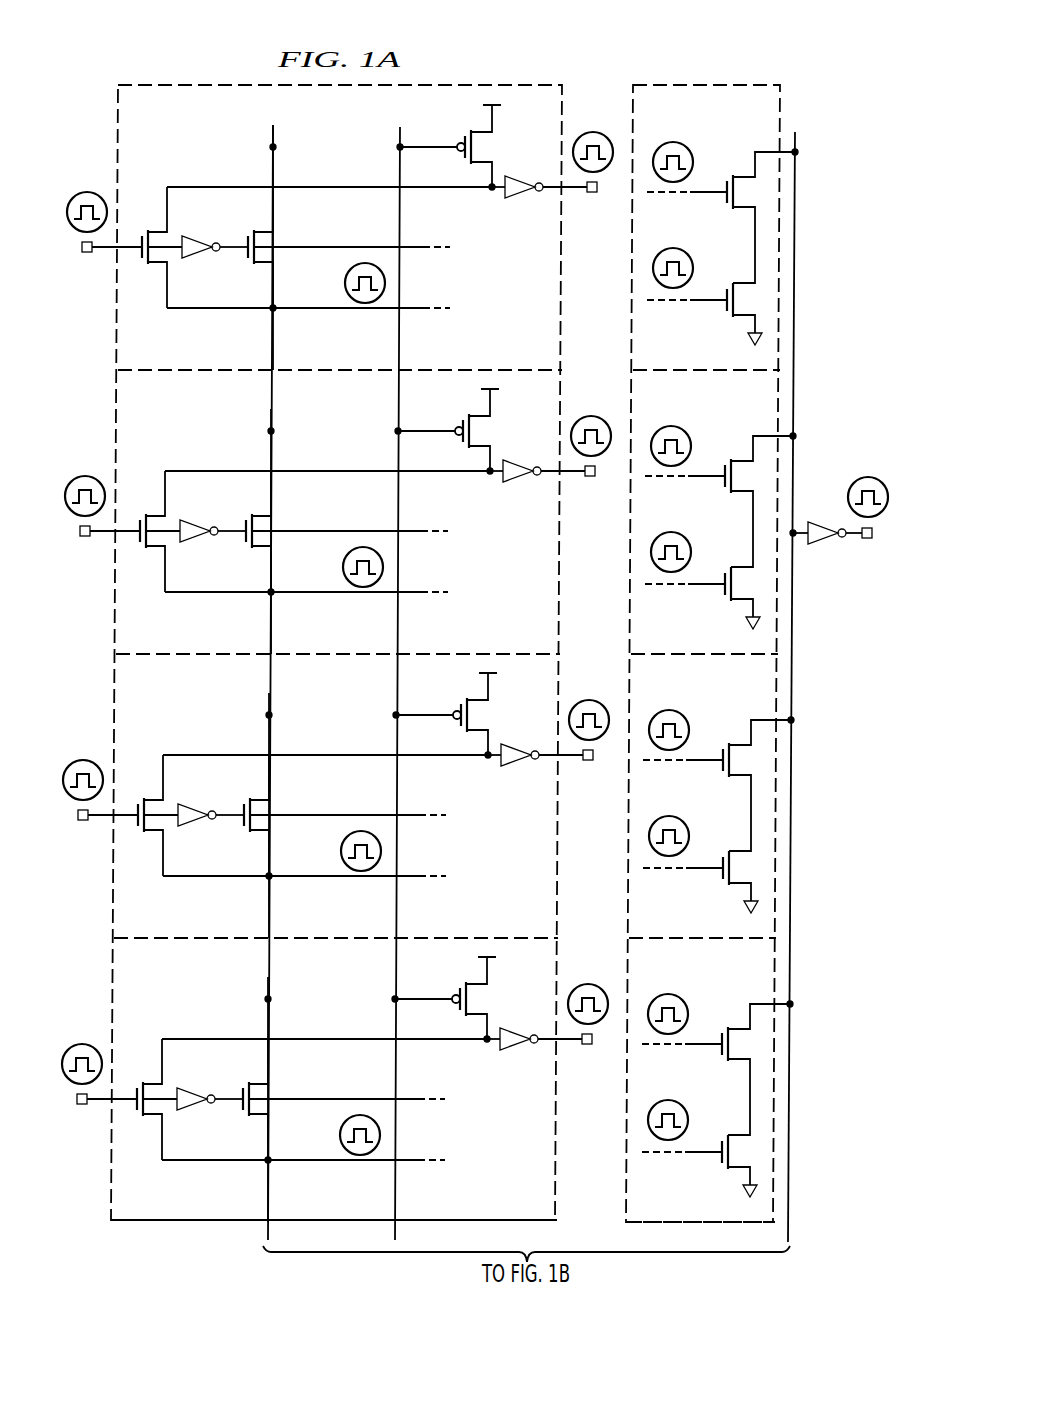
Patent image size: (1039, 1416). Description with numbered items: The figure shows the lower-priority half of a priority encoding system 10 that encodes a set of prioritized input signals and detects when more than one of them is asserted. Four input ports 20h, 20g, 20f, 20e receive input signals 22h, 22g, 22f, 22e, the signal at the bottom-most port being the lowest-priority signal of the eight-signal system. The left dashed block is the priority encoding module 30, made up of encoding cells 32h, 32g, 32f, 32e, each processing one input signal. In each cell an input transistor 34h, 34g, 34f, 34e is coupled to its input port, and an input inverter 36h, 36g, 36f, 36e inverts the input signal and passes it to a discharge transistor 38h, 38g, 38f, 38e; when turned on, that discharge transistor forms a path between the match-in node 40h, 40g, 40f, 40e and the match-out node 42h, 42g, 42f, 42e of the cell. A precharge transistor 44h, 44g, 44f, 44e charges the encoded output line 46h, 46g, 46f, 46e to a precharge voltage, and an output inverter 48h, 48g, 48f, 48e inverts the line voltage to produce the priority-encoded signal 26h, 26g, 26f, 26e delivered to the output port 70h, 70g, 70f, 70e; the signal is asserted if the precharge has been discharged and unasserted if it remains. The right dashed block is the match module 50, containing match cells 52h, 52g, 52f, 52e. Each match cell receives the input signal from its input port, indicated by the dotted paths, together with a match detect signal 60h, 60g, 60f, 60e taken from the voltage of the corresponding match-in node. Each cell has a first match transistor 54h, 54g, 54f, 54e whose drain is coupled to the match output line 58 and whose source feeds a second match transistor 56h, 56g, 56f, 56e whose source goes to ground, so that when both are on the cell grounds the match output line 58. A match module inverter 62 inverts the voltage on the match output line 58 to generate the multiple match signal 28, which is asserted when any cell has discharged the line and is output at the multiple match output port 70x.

The priority encoding system 10 is at (839, 52).
The multiple match signal 28 is at (870, 477).
The priority encoding module 30 is at (197, 80).
The match module 50 is at (721, 74).
The match output line 58 is at (797, 250).
The match module inverter 62 is at (823, 547).
The multiple match output port 70x is at (867, 539).
The input port 20h is at (86, 253).
The input port 20g is at (98, 556).
The input port 20f is at (96, 840).
The input port 20e is at (95, 1124).
The input signal 22h is at (88, 192).
The input signal 22g is at (374, 445).
The input signal 22f is at (372, 729).
The input signal 22e is at (371, 1013).
The priority-encoded signal 26h is at (594, 132).
The priority-encoded signal 26g is at (595, 410).
The priority-encoded signal 26f is at (593, 694).
The priority-encoded signal 26e is at (592, 978).
The encoding cell 32h is at (521, 297).
The encoding cell 32g is at (338, 604).
The encoding cell 32f is at (336, 888).
The encoding cell 32e is at (335, 1171).
The input transistor 34h is at (135, 230).
The input transistor 34g is at (153, 526).
The input transistor 34f is at (151, 810).
The input transistor 34e is at (150, 1094).
The input inverter 36h is at (203, 262).
The input inverter 36g is at (213, 551).
The input inverter 36f is at (211, 835).
The input inverter 36e is at (210, 1119).
The discharge transistor 38h is at (247, 230).
The discharge transistor 38g is at (317, 531).
The discharge transistor 38f is at (315, 815).
The discharge transistor 38e is at (314, 1099).
The match-in node 40h is at (268, 315).
The match-in node 40g is at (306, 614).
The match-in node 40f is at (304, 898).
The match-in node 40e is at (303, 1182).
The match-out node 42h is at (279, 147).
The match-out node 42g is at (306, 529).
The match-out node 42f is at (304, 813).
The match-out node 42e is at (303, 1097).
The precharge transistor 44h is at (462, 130).
The precharge transistor 44g is at (447, 430).
The precharge transistor 44f is at (445, 714).
The precharge transistor 44e is at (444, 998).
The encoded output line 46h is at (222, 187).
The encoded output line 46g is at (327, 445).
The encoded output line 46f is at (325, 729).
The encoded output line 46e is at (324, 1013).
The output inverter 48h is at (528, 172).
The output inverter 48g is at (537, 448).
The output inverter 48f is at (535, 732).
The output inverter 48e is at (534, 1016).
The match cell 52h is at (689, 348).
The match cell 52g is at (704, 629).
The match cell 52f is at (702, 913).
The match cell 52e is at (701, 1197).
The first match transistor 54h is at (717, 177).
The first match transistor 54g is at (720, 488).
The first match transistor 54f is at (718, 772).
The first match transistor 54e is at (717, 1056).
The second match transistor 56h is at (721, 312).
The second match transistor 56g is at (702, 608).
The second match transistor 56f is at (700, 892).
The second match transistor 56e is at (699, 1176).
The match detect signal 60h is at (347, 280).
The match detect signal 60g is at (486, 533).
The match detect signal 60f is at (484, 817).
The match detect signal 60e is at (483, 1101).
The output port 70h is at (592, 193).
The output port 70g is at (602, 498).
The output port 70f is at (600, 782).
The output port 70e is at (599, 1066).